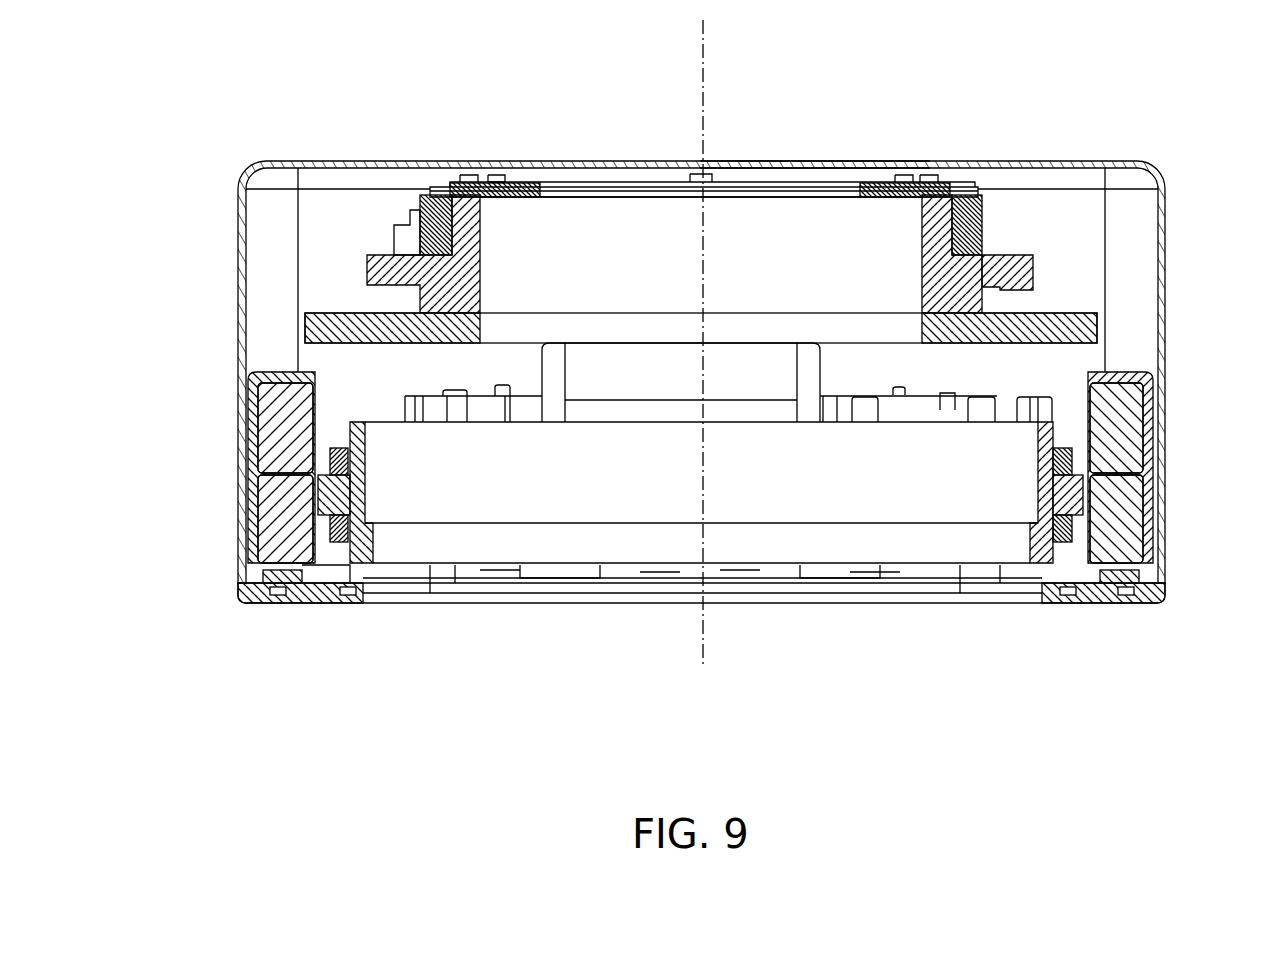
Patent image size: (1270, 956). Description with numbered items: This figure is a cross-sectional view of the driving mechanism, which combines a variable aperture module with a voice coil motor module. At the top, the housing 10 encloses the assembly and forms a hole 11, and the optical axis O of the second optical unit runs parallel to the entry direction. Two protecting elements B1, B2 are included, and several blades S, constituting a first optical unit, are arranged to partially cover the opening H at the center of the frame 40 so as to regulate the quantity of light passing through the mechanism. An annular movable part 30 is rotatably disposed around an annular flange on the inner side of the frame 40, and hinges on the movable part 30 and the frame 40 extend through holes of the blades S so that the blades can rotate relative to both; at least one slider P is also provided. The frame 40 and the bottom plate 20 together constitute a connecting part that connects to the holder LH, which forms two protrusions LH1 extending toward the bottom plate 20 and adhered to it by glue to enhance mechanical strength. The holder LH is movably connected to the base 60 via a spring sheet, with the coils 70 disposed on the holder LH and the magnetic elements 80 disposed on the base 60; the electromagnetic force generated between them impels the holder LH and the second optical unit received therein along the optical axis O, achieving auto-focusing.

The housing 10 is at (278, 162).
The hole 11 is at (815, 164).
The bottom plate 20 is at (902, 343).
The annular movable part 30 is at (968, 212).
The frame 40 is at (1020, 272).
The base 60 is at (323, 603).
The coils 70 is at (338, 460).
The magnetic element 80 is at (282, 528).
The optical axis O is at (703, 20).
The slider P is at (415, 208).
The blades S is at (545, 190).
The protecting element B1 is at (487, 182).
The protecting element B2 is at (651, 184).
The opening H is at (881, 212).
The holder LH is at (1037, 472).
The protrusion LH1 is at (755, 372).